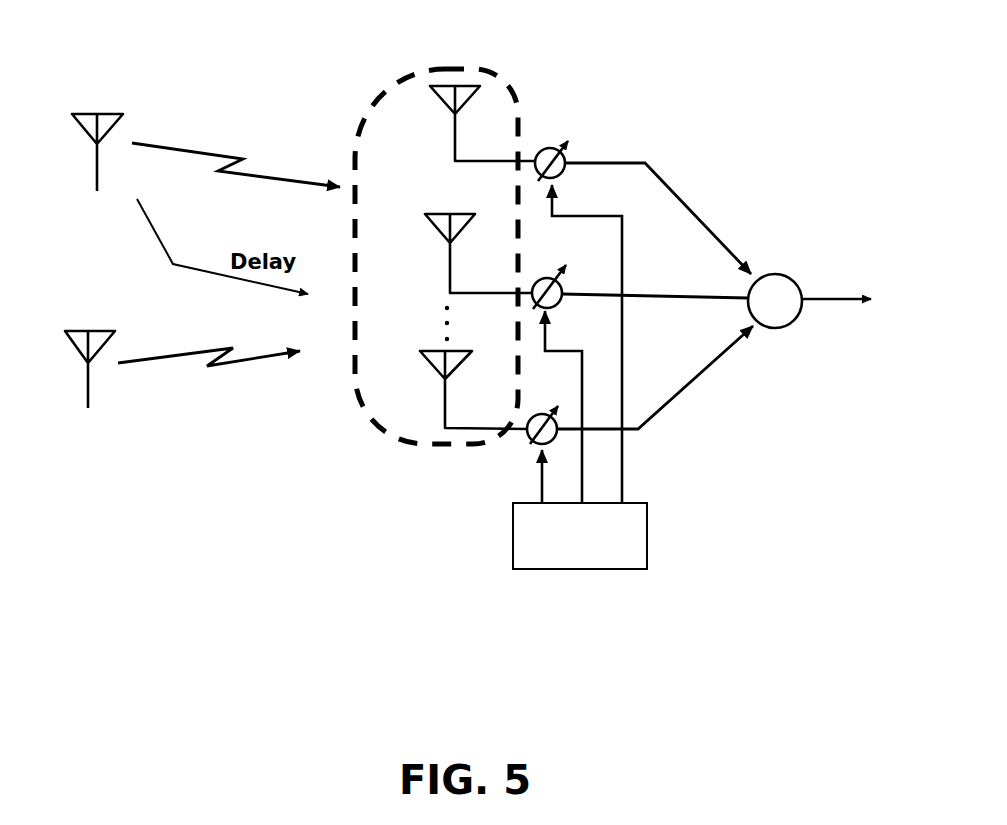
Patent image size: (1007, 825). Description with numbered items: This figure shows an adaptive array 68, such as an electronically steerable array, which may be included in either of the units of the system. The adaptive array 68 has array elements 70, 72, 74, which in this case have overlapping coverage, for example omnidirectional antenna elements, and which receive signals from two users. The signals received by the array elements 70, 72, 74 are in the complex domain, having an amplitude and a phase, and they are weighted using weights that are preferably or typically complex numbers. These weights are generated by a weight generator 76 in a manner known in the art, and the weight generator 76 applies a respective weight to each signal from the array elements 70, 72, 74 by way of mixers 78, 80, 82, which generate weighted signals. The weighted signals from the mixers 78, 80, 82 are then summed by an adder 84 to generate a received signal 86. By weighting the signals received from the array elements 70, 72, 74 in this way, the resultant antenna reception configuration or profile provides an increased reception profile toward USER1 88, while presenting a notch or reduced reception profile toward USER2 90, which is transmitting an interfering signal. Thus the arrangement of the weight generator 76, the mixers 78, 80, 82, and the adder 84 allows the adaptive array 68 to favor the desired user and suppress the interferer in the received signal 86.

The adaptive array 68 is at (442, 505).
The array element 70 is at (470, 102).
The array element 72 is at (437, 213).
The array element 74 is at (443, 370).
The weight generator 76 is at (598, 568).
The mixer 78 is at (567, 150).
The mixer 80 is at (543, 276).
The mixer 82 is at (541, 413).
The adder 84 is at (777, 273).
The received signal 86 is at (850, 346).
The USER1 88 is at (97, 103).
The USER2 90 is at (90, 443).